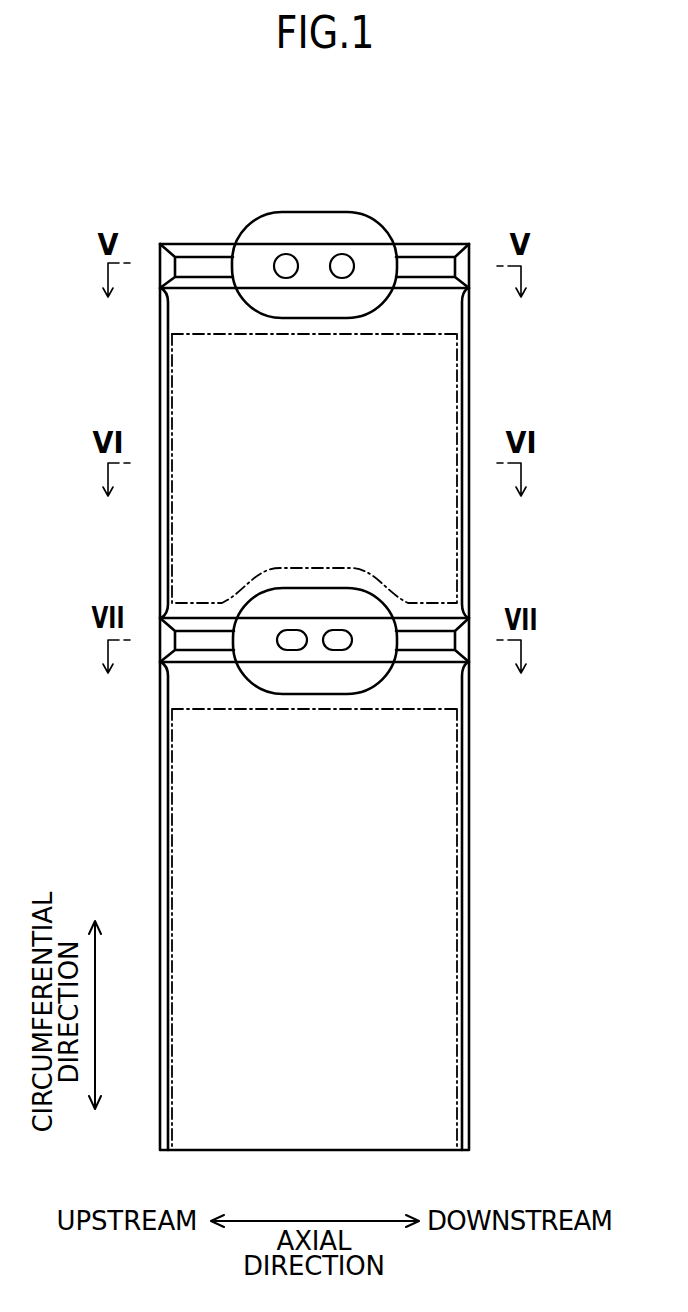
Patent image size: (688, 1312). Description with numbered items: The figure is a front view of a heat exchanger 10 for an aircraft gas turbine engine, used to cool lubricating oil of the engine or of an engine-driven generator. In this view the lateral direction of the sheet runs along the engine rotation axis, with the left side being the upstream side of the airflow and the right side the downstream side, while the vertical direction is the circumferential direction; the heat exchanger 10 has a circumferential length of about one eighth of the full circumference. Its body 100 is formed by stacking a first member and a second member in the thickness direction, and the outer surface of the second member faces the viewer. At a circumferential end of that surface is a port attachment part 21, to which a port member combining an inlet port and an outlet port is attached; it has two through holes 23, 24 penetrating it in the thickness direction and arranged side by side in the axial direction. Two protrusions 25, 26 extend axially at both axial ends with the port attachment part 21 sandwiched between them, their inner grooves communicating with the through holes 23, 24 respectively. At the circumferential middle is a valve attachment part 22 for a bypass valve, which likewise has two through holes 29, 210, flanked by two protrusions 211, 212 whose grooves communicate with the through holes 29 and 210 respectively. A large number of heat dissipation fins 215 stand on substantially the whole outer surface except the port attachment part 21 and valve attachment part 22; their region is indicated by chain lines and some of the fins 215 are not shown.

The heat exchanger 10 is at (461, 157).
The body 100 is at (478, 1136).
The port attachment part 21 is at (376, 228).
The valve attachment part 22 is at (362, 683).
The through hole 23 is at (340, 262).
The through hole 24 is at (287, 262).
The protrusion 25 is at (432, 262).
The protrusion 26 is at (196, 262).
The through hole 29 is at (331, 632).
The through hole 210 is at (292, 632).
The protrusion 211 is at (432, 640).
The protrusion 212 is at (196, 640).
The heat dissipation fins 215 is at (463, 366).